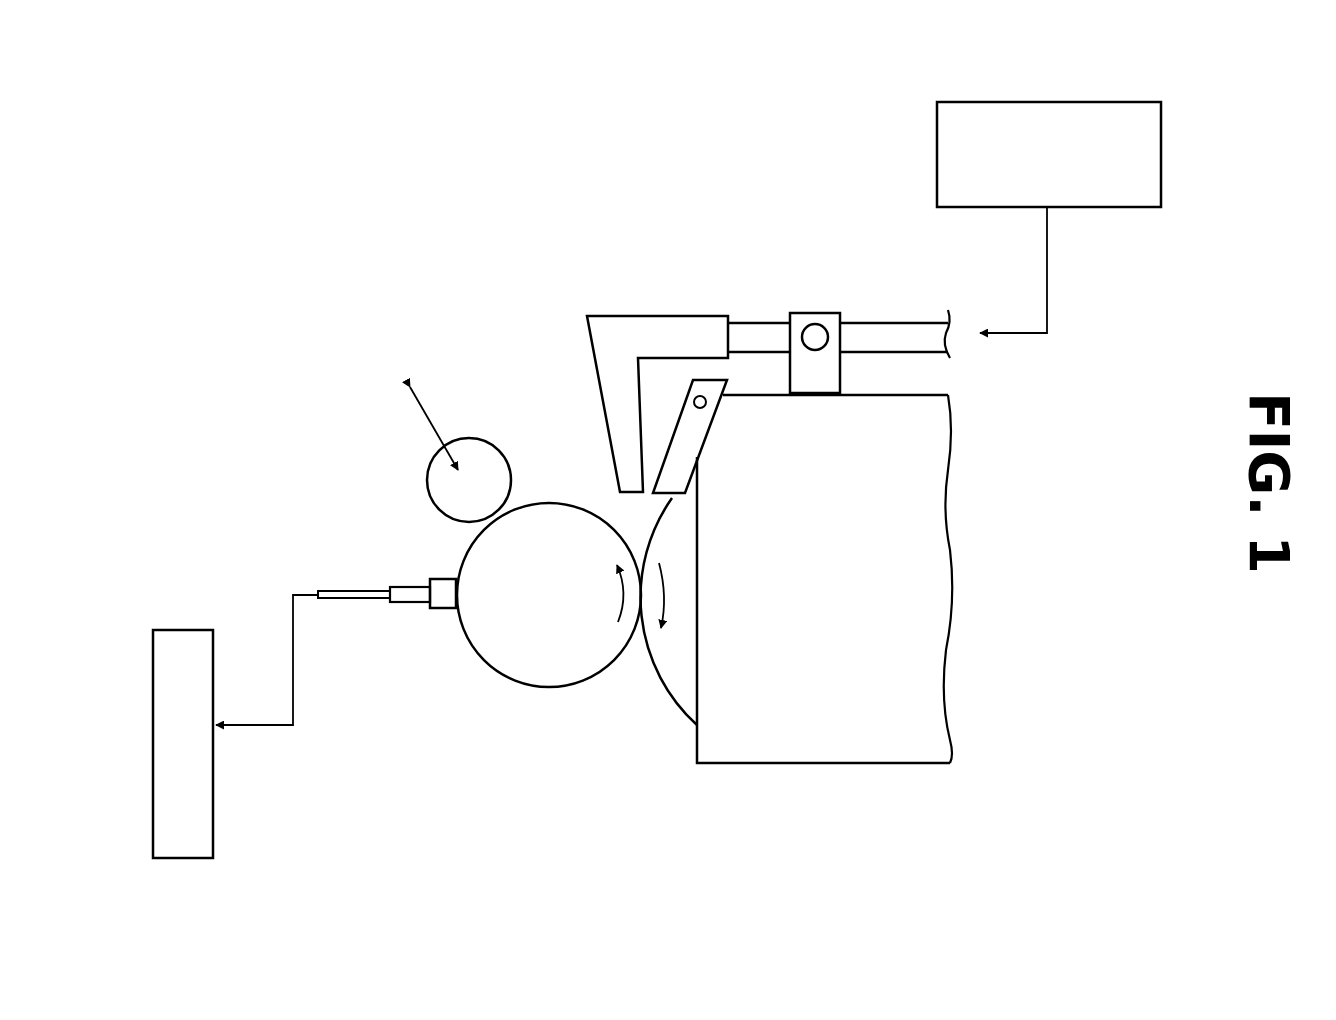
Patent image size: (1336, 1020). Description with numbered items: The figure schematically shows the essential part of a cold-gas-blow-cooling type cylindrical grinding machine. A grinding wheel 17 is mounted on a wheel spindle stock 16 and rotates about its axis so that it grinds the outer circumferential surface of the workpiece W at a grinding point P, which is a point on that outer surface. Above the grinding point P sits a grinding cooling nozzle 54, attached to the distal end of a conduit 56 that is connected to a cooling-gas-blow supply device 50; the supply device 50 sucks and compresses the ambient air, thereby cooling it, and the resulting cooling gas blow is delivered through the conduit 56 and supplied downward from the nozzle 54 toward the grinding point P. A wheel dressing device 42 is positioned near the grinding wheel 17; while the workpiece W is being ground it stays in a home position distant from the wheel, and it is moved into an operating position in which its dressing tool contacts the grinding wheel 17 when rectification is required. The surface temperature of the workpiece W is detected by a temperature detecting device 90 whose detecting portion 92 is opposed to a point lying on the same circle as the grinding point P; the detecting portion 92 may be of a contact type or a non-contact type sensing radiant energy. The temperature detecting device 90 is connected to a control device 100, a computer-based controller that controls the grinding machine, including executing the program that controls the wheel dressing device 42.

The wheel spindle stock 16 is at (832, 747).
The grinding wheel 17 is at (673, 673).
The wheel dressing device 42 is at (478, 408).
The cooling-gas-blow supply device 50 is at (960, 113).
The grinding cooling nozzle 54 is at (620, 433).
The conduit 56 is at (900, 337).
The temperature detecting device 90 is at (344, 560).
The detecting portion 92 is at (443, 602).
The control device 100 is at (205, 835).
The workpiece W is at (553, 690).
The grinding point P is at (640, 540).